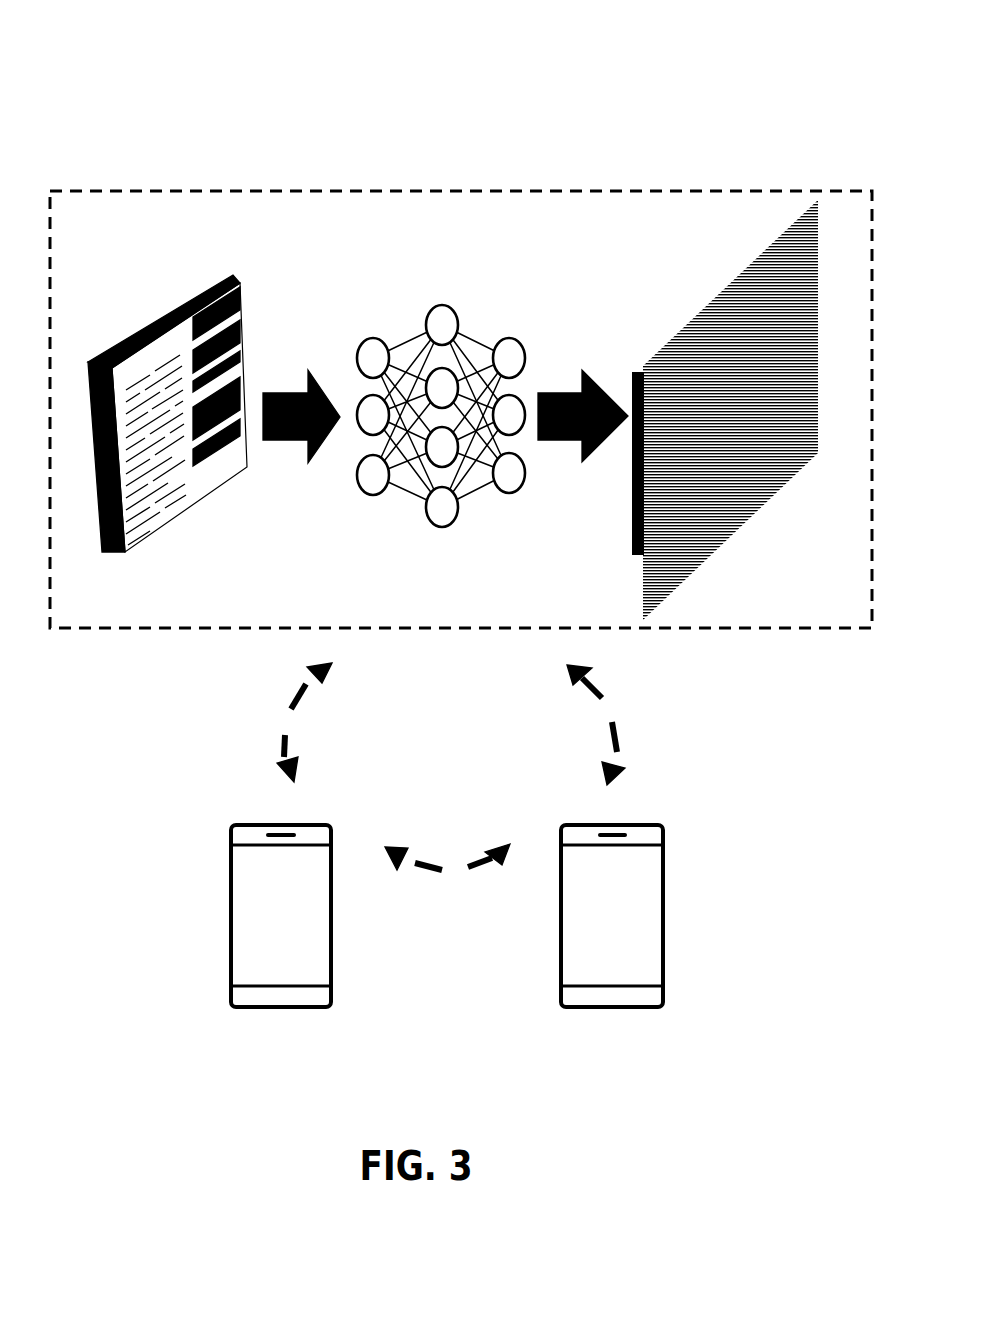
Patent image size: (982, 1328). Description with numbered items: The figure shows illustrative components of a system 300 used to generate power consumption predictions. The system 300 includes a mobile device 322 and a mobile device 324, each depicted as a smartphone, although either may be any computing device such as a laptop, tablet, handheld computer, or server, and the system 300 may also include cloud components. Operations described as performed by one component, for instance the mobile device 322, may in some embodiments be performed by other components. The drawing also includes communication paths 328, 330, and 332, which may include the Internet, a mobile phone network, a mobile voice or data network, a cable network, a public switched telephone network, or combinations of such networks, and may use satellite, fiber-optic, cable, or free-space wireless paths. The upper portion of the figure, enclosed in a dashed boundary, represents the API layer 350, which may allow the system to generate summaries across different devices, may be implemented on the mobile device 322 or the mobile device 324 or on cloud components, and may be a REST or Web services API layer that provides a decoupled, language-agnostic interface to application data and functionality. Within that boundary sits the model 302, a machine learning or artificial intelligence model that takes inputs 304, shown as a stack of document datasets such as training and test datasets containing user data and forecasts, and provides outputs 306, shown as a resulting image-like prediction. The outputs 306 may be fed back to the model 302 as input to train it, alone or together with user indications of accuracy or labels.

The system 300 is at (406, 34).
The API layer 350 is at (570, 170).
The model 302 is at (422, 274).
The inputs 304 is at (177, 530).
The outputs 306 is at (763, 528).
The mobile device 322 is at (208, 903).
The mobile device 324 is at (675, 910).
The communication path 328 is at (268, 708).
The communication path 330 is at (638, 712).
The communication path 332 is at (433, 885).